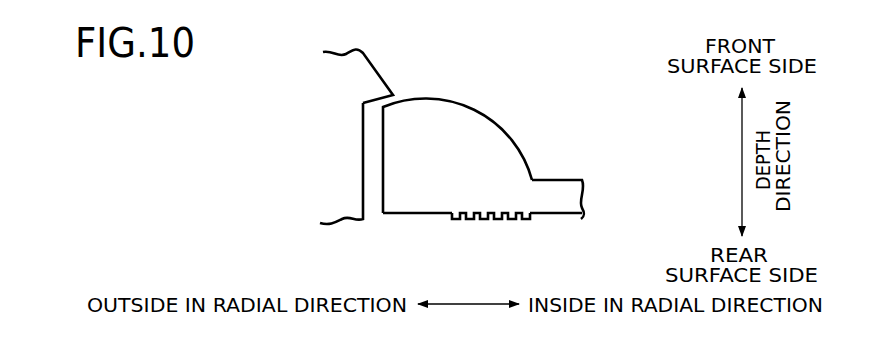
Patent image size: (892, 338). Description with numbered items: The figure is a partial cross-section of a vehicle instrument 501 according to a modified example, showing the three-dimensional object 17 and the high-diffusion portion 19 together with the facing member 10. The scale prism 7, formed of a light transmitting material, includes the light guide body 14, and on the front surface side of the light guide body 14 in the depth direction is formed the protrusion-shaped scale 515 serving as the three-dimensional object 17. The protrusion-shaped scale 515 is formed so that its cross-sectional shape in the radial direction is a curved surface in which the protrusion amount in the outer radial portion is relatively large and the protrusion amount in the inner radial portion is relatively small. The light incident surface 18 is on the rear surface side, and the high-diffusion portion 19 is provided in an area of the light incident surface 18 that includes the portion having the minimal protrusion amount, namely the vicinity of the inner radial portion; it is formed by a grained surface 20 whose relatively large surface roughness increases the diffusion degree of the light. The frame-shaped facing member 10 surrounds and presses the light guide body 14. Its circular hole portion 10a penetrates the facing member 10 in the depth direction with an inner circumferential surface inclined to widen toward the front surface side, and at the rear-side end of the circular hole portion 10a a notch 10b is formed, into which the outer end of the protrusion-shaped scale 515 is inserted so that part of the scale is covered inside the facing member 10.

The vehicle instrument 501 is at (680, 43).
The facing member 10 is at (346, 121).
The circular hole portion 10a is at (385, 76).
The notch 10b is at (360, 184).
The scale prism 7 is at (603, 73).
The protrusion-shaped scale 515 is at (487, 137).
The three-dimensional object 17 is at (470, 144).
The light guide body 14 is at (564, 176).
The light incident surface 18 is at (431, 218).
The high-diffusion portion 19 is at (479, 224).
The grained surface 20 is at (491, 245).